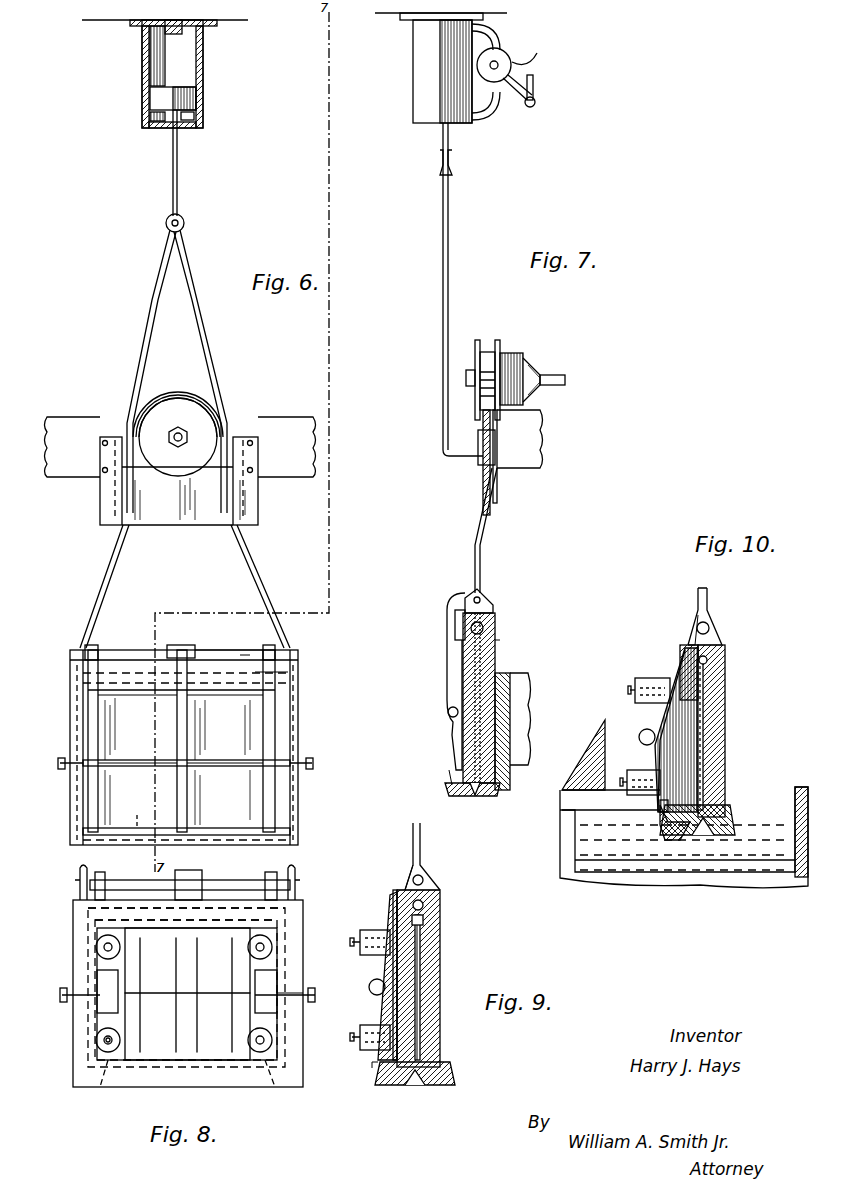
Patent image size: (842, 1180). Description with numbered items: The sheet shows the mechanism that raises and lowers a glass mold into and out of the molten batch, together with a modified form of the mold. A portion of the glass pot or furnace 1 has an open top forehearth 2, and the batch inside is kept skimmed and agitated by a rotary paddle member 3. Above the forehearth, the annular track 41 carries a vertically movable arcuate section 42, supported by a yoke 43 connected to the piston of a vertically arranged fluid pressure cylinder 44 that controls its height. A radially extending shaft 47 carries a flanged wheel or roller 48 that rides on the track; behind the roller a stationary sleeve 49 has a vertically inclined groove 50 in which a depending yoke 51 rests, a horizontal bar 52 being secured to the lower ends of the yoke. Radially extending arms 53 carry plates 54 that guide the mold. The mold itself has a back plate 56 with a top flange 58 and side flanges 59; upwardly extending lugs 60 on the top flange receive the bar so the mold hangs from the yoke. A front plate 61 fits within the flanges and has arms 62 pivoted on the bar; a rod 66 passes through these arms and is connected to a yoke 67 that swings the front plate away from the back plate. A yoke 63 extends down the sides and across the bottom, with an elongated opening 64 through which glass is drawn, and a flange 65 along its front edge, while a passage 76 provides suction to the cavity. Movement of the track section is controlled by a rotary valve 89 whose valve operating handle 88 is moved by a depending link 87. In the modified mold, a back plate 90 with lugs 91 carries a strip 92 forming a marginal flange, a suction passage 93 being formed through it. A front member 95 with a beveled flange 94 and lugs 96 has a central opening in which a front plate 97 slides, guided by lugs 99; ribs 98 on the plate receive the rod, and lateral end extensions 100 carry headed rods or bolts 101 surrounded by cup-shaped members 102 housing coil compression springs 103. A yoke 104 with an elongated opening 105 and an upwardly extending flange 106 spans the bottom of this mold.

In FIG. 10, the glass pot or furnace 1 is at (575, 755).
In FIG. 10, the open top forehearth 2 is at (795, 800).
In FIG. 10, the rotary paddle member 3 is at (740, 815).
In FIG. 6, the annular track 41 is at (70, 420).
In FIG. 7, the annular track 41 is at (543, 432).
In FIG. 6, the vertically movable arcuate section 42 is at (185, 525).
In FIG. 7, the vertically movable arcuate section 42 is at (483, 468).
In FIG. 6, the yoke 43 is at (215, 347).
In FIG. 7, the yoke 43 is at (443, 255).
In FIG. 6, the fluid pressure cylinder 44 is at (203, 78).
In FIG. 7, the fluid pressure cylinder 44 is at (413, 60).
In FIG. 7, the radially extending shaft 47 is at (560, 375).
In FIG. 6, the flanged wheel or roller 48 is at (200, 425).
In FIG. 7, the flanged wheel or roller 48 is at (490, 350).
In FIG. 7, the stationary sleeve 49 is at (532, 368).
In FIG. 7, the vertically inclined groove 50 is at (512, 355).
In FIG. 6, the depending yoke 51 is at (262, 570).
In FIG. 8, the depending yoke 51 is at (80, 868).
In FIG. 7, the depending yoke 51 is at (480, 538).
In FIG. 9, the depending yoke 51 is at (428, 870).
In FIG. 10, the depending yoke 51 is at (708, 605).
In FIG. 6, the horizontal bar 52 is at (228, 650).
In FIG. 8, the horizontal bar 52 is at (228, 885).
In FIG. 9, the horizontal bar 52 is at (423, 876).
In FIG. 10, the horizontal bar 52 is at (709, 626).
In FIG. 7, the radially extending arms 53 is at (528, 700).
In FIG. 10, the radially extending arms 53 is at (556, 685).
In FIG. 7, the plate 54 is at (505, 673).
In FIG. 7, the back plate 56 is at (497, 645).
In FIG. 6, the top flange 58 is at (255, 685).
In FIG. 7, the top flange 58 is at (455, 620).
In FIG. 6, the side flange 59 is at (83, 718).
In FIG. 6, the upwardly extending lugs 60 is at (92, 645).
In FIG. 7, the upwardly extending lugs 60 is at (485, 600).
In FIG. 6, the front plate 61 is at (245, 745).
In FIG. 7, the front plate 61 is at (468, 684).
In FIG. 6, the arms 62 is at (98, 650).
In FIG. 7, the arms 62 is at (449, 645).
In FIG. 6, the yoke 63 is at (70, 825).
In FIG. 7, the yoke 63 is at (492, 792).
In FIG. 6, the elongated opening 64 is at (133, 814).
In FIG. 7, the elongated opening 64 is at (475, 795).
In FIG. 6, the upwardly extending flange 65 is at (240, 815).
In FIG. 7, the upwardly extending flange 65 is at (452, 778).
In FIG. 6, the rod 66 is at (140, 766).
In FIG. 8, the rod 66 is at (290, 1000).
In FIG. 7, the rod 66 is at (448, 712).
In FIG. 6, the yoke 67 is at (60, 763).
In FIG. 8, the yoke 67 is at (60, 992).
In FIG. 9, the yoke 67 is at (355, 989).
In FIG. 6, the passage 76 is at (245, 655).
In FIG. 7, the passage 76 is at (484, 625).
In FIG. 7, the depending link 87 is at (533, 80).
In FIG. 7, the valve operating handle 88 is at (525, 108).
In FIG. 7, the rotary valve 89 is at (500, 58).
In FIG. 9, the back plate 90 is at (440, 985).
In FIG. 10, the back plate 90 is at (725, 703).
In FIG. 9, the upwardly extending lugs 91 is at (430, 890).
In FIG. 10, the upwardly extending lugs 91 is at (712, 645).
In FIG. 9, the strip 92 is at (438, 890).
In FIG. 10, the strip 92 is at (720, 648).
In FIG. 9, the suction passage 93 is at (424, 903).
In FIG. 10, the suction passage 93 is at (708, 658).
In FIG. 9, the inwardly extending beveled flange 94 is at (423, 920).
In FIG. 8, the front member 95 is at (270, 915).
In FIG. 9, the front member 95 is at (393, 895).
In FIG. 10, the front member 95 is at (682, 655).
In FIG. 8, the upwardly extending lugs 96 is at (100, 872).
In FIG. 9, the upwardly extending lugs 96 is at (405, 885).
In FIG. 10, the upwardly extending lugs 96 is at (692, 642).
In FIG. 8, the front plate 97 is at (215, 1010).
In FIG. 9, the front plate 97 is at (388, 1010).
In FIG. 10, the front plate 97 is at (665, 725).
In FIG. 8, the ribs 98 is at (185, 965).
In FIG. 9, the ribs 98 is at (370, 985).
In FIG. 8, the lugs 99 is at (97, 980).
In FIG. 8, the lateral end extensions 100 is at (100, 960).
In FIG. 8, the headed rods or bolts 101 is at (104, 1042).
In FIG. 10, the headed rods or bolts 101 is at (640, 732).
In FIG. 8, the cup-shaped member 102 is at (270, 928).
In FIG. 10, the cup-shaped member 102 is at (650, 678).
In FIG. 9, the coil compression spring 103 is at (375, 930).
In FIG. 9, the yoke 104 is at (445, 1068).
In FIG. 10, the yoke 104 is at (728, 810).
In FIG. 8, the elongated opening 105 is at (140, 1082).
In FIG. 9, the elongated opening 105 is at (420, 1085).
In FIG. 10, the elongated opening 105 is at (703, 830).
In FIG. 9, the upwardly extending flange 106 is at (375, 1068).
In FIG. 10, the upwardly extending flange 106 is at (660, 806).